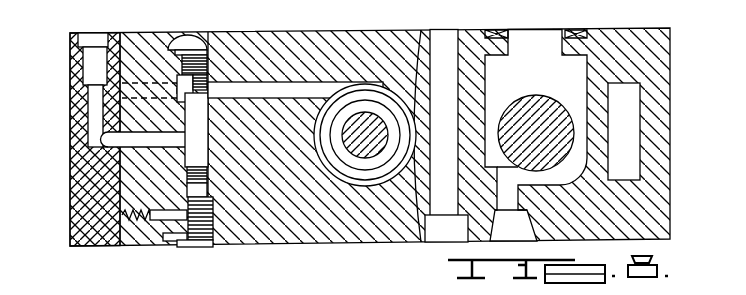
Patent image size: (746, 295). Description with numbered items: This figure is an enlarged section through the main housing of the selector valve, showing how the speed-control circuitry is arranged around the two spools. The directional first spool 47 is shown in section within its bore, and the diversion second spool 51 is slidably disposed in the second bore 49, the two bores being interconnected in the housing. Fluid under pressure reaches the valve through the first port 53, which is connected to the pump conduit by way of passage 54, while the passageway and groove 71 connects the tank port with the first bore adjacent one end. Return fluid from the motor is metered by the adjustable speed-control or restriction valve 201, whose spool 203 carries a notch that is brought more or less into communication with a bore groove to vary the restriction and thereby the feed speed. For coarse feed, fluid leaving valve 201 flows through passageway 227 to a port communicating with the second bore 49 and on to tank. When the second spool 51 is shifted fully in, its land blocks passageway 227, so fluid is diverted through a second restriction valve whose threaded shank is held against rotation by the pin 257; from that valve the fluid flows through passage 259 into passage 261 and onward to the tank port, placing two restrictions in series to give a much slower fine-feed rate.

The passage 261 is at (83, 100).
The passage 259 is at (150, 130).
The pin 257 is at (152, 208).
The adjustable speed-control valve 201 is at (215, 130).
The spool 203 is at (206, 153).
The passageway 227 is at (262, 82).
The second bore 49 is at (346, 161).
The second spool 51 is at (365, 150).
The first port 53 is at (558, 39).
The first spool 47 is at (557, 98).
The passageway and groove 71 is at (640, 121).
The passage 54 is at (524, 184).